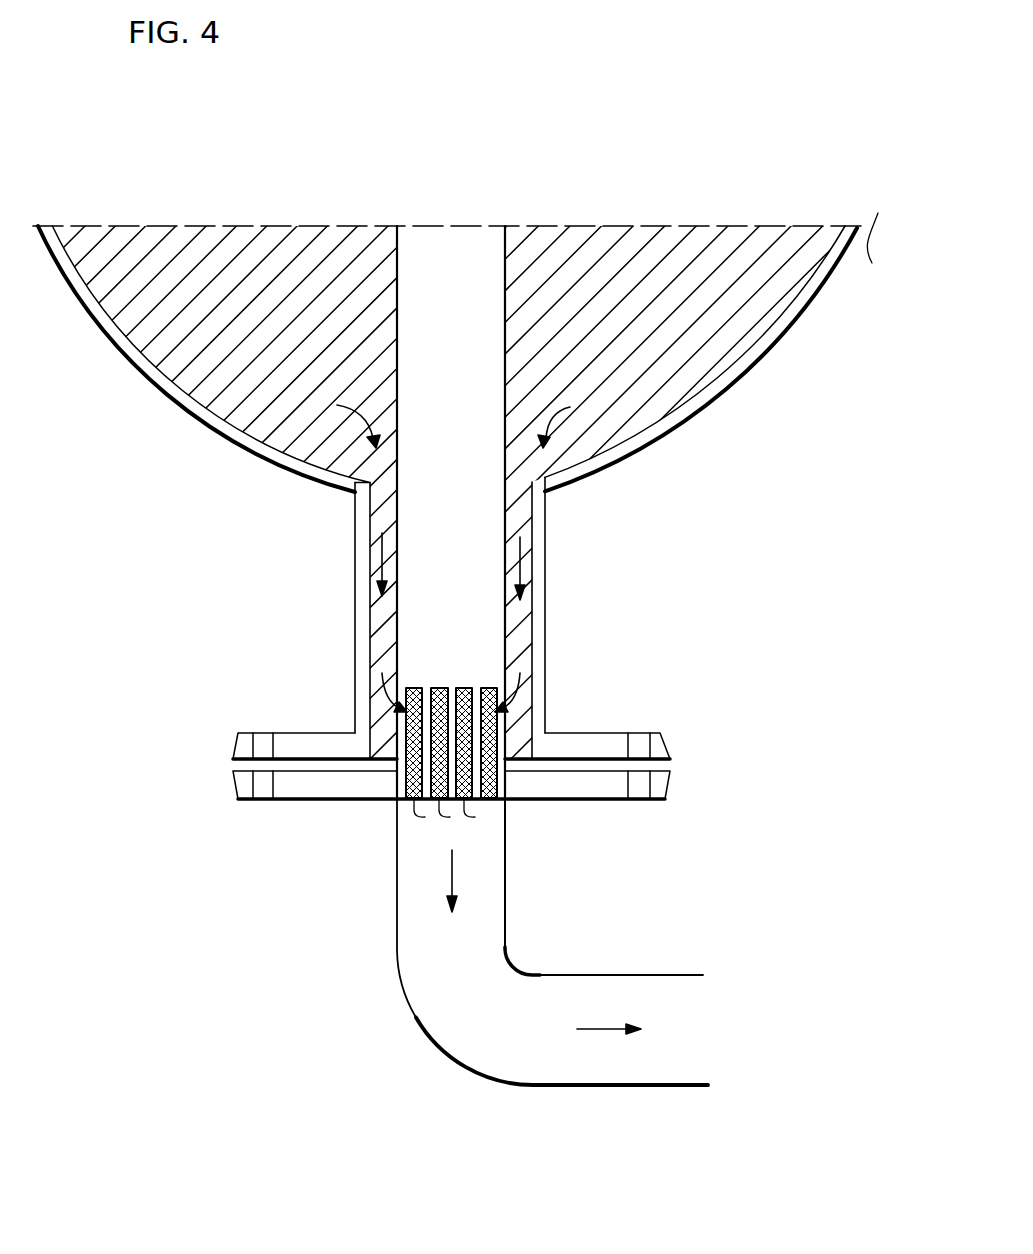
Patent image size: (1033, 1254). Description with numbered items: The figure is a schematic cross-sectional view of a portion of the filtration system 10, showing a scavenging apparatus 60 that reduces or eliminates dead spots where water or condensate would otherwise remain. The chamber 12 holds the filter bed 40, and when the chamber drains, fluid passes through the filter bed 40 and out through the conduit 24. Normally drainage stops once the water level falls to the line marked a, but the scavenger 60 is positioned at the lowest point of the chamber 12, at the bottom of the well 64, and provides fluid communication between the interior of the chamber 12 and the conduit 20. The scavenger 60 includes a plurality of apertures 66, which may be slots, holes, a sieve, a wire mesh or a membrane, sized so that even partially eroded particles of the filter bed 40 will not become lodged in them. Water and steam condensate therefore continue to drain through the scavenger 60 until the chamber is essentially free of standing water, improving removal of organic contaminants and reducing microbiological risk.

The filtration system 10 is at (713, 150).
The chamber 12 is at (127, 368).
The conduit 20 is at (437, 1047).
The conduit 24 is at (456, 342).
The filter bed 40 is at (157, 270).
The scavenging apparatus 60 is at (483, 642).
The well 64 is at (407, 712).
The apertures 66 is at (412, 818).